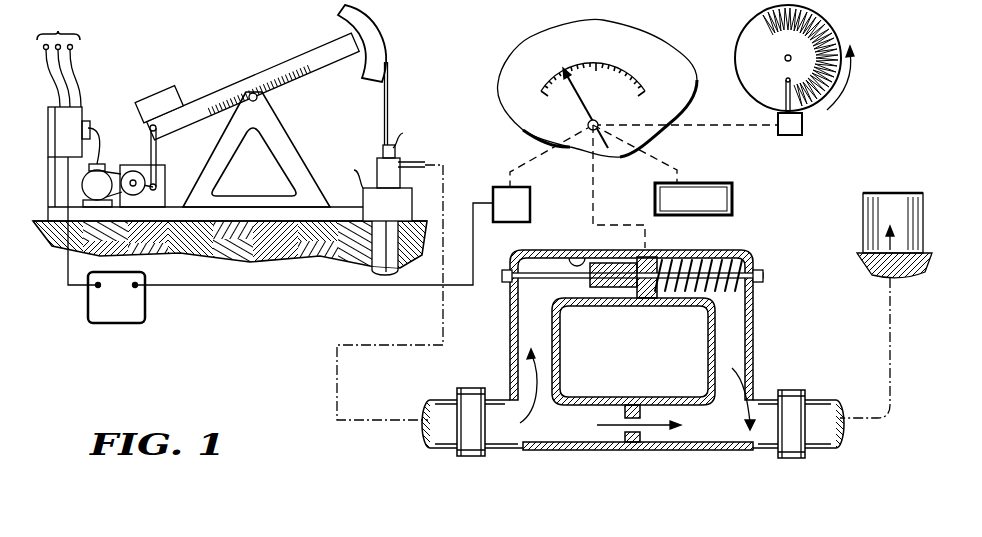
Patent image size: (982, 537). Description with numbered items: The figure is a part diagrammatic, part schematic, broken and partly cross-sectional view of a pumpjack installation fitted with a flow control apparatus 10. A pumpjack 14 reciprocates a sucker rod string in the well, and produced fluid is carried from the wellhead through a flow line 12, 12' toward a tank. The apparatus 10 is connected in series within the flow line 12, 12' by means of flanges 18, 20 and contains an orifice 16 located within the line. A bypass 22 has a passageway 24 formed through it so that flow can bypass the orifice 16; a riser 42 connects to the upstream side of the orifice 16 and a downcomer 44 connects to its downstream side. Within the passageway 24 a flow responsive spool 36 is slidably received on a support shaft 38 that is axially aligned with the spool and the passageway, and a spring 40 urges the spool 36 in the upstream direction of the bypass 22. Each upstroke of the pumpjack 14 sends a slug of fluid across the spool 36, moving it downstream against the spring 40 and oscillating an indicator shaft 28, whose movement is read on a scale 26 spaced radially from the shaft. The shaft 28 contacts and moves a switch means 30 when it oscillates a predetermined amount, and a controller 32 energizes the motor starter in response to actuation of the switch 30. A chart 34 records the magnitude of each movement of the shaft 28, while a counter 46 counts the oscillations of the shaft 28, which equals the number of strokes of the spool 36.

The flow control apparatus 10 is at (866, 135).
The flow line 12 is at (393, 273).
The flow line 12' is at (876, 305).
The pumpjack 14 is at (301, 50).
The orifice 16 is at (631, 405).
The flange 18 is at (470, 388).
The flange 20 is at (790, 388).
The bypass 22 is at (681, 237).
The passageway 24 is at (580, 262).
The scale 26 is at (647, 60).
The indicator shaft 28 is at (588, 124).
The switch means 30 is at (530, 193).
The controller 32 is at (128, 311).
The chart 34 is at (823, 33).
The spool 36 is at (652, 302).
The support shaft 38 is at (532, 283).
The spring 40 is at (728, 288).
The riser 42 is at (540, 352).
The downcomer 44 is at (732, 338).
The counter 46 is at (706, 183).